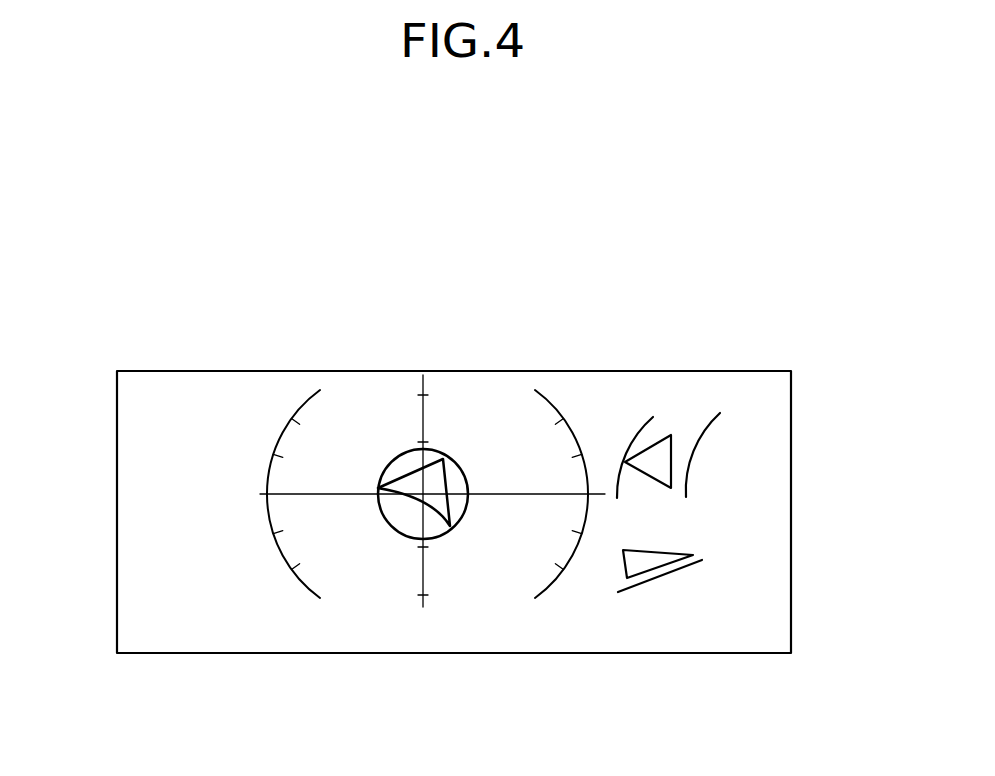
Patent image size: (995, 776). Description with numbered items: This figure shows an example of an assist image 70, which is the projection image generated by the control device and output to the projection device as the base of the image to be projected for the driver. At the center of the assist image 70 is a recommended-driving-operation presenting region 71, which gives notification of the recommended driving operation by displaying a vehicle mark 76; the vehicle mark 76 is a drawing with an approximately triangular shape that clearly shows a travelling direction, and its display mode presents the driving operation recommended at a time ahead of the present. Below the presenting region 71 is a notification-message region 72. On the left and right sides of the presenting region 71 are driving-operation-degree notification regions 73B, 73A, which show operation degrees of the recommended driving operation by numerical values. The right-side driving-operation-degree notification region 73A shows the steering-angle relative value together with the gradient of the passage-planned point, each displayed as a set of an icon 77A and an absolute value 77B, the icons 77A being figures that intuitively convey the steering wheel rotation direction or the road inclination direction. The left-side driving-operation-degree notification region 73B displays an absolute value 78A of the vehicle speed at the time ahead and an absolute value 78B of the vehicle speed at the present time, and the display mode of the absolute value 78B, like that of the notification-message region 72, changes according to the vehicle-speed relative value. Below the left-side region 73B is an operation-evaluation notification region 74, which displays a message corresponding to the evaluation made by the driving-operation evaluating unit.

The assist image 70 is at (378, 371).
The recommended-driving-operation presenting region 71 is at (503, 397).
The notification-message region 72 is at (518, 635).
The driving-operation-degree notification region 73A is at (723, 400).
The driving-operation-degree notification region 73B is at (188, 382).
The operation-evaluation notification region 74 is at (128, 625).
The vehicle mark 76 is at (452, 453).
The icon 77A is at (628, 423).
The absolute value 77B is at (765, 443).
The absolute value of the vehicle speed at the time ahead 78A is at (137, 438).
The absolute value of the vehicle speed at the present time 78B is at (135, 498).